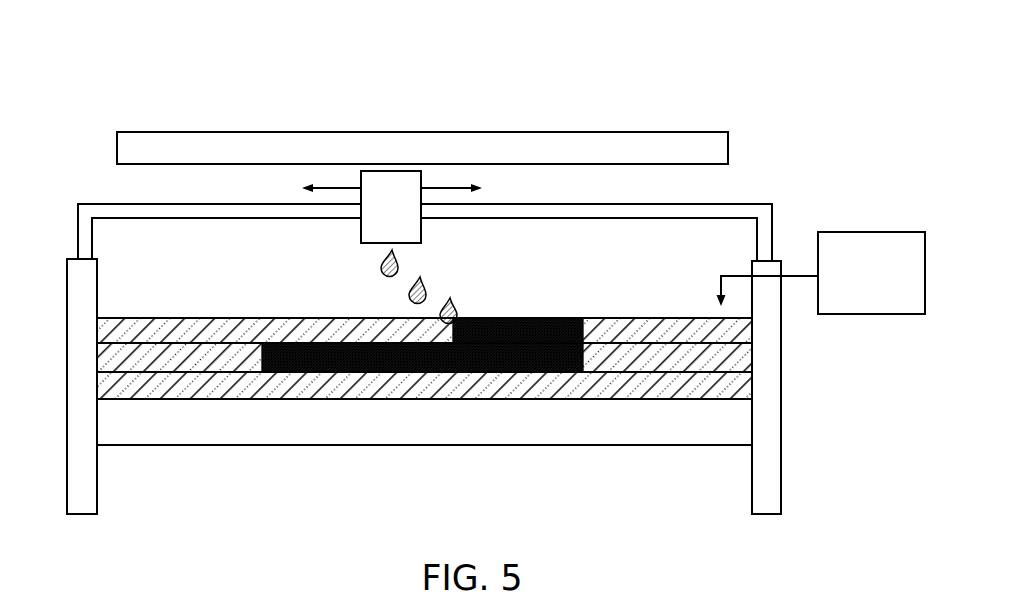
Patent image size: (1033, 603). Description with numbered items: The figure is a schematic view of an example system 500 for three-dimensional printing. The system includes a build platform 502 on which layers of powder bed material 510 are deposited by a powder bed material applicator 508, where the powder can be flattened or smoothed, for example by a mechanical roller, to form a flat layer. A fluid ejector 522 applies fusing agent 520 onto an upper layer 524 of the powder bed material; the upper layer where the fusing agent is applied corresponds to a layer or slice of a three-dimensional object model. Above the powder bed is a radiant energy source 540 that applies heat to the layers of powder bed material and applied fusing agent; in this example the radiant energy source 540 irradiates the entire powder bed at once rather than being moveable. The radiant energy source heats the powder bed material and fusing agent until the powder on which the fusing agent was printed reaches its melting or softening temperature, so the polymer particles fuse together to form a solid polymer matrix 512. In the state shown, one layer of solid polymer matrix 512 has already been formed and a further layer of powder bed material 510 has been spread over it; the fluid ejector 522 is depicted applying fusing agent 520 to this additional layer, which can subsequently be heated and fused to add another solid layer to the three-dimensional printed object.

The system for three-dimensional printing 500 is at (157, 43).
The build platform 502 is at (589, 411).
The powder bed material applicator 508 is at (821, 273).
The powder bed material 510 is at (161, 328).
The solid polymer matrix 512 is at (385, 372).
The fusing agent 520 is at (382, 263).
The fluid ejector 522 is at (392, 207).
The upper layer 524 is at (498, 340).
The radiant energy source 540 is at (422, 148).